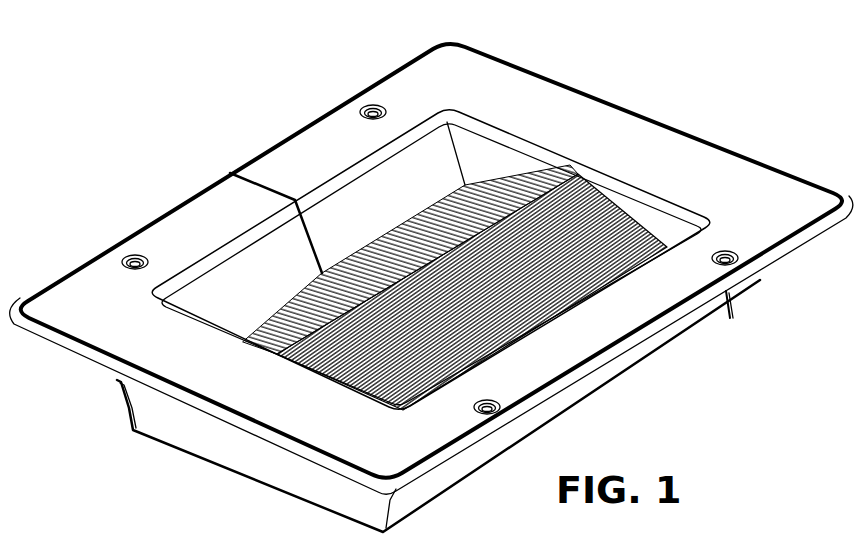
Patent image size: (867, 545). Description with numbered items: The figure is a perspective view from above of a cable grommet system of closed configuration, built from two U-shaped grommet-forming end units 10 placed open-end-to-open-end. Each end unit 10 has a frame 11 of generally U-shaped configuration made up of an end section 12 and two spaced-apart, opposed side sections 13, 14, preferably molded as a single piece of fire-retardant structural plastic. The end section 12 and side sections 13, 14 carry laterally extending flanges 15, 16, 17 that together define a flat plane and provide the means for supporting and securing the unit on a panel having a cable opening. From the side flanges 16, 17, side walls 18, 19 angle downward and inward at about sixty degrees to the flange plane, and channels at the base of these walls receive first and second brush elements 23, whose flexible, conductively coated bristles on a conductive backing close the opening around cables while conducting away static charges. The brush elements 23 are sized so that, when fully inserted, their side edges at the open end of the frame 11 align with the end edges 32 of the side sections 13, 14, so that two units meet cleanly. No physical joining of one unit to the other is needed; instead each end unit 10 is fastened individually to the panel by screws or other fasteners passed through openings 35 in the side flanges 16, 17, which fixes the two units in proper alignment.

The grommet-forming end unit 10 is at (638, 150).
The frame 11 is at (567, 63).
The end section 12 is at (672, 158).
The side section 13 is at (333, 132).
The side section 14 is at (182, 230).
The flange 15 is at (600, 113).
The side flange 16 is at (292, 145).
The side flange 17 is at (97, 287).
The side wall 18 is at (347, 210).
The side wall 19 is at (273, 257).
The brush element 23 is at (487, 190).
The end edge 32 is at (317, 247).
The opening 35 is at (372, 105).